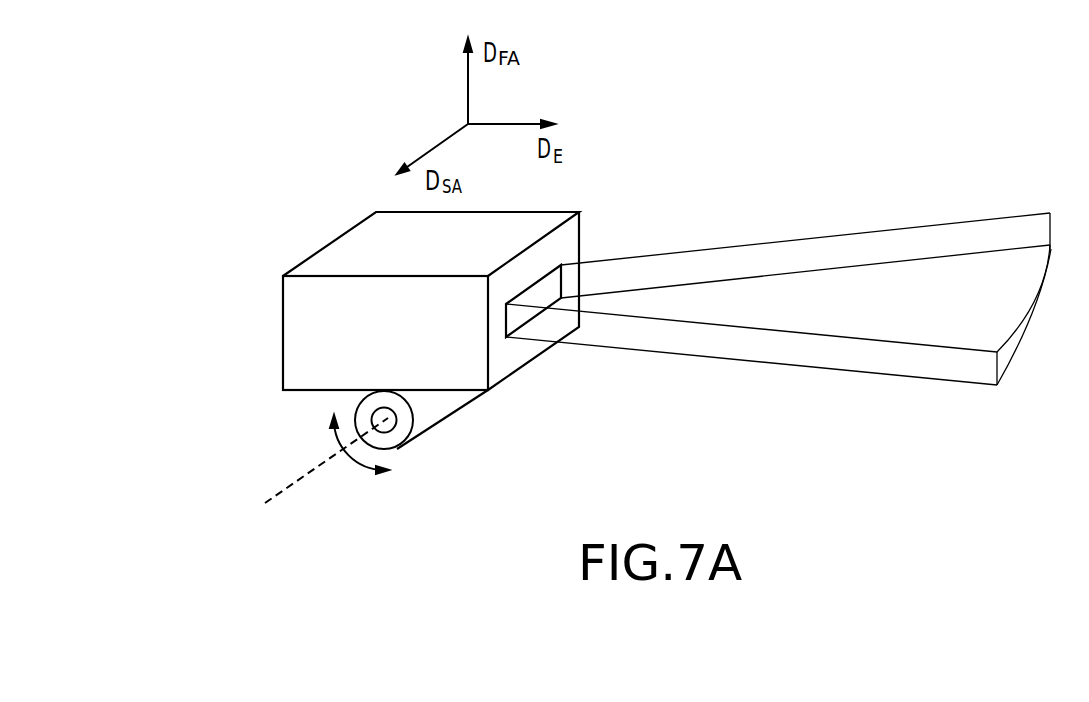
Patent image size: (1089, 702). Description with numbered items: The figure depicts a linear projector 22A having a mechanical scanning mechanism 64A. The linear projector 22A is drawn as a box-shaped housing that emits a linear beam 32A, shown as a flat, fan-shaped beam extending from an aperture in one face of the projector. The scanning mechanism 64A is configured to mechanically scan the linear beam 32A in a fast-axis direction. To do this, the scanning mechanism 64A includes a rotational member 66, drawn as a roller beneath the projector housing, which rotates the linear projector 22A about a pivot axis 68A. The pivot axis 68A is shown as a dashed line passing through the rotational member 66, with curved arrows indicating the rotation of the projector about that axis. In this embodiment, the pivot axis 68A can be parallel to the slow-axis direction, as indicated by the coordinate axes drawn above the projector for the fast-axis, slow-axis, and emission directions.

The linear projector 22A is at (408, 351).
The linear beam 32A is at (776, 262).
The scanning mechanism 64A is at (462, 407).
The rotational member 66 is at (392, 425).
The pivot axis 68A is at (300, 462).